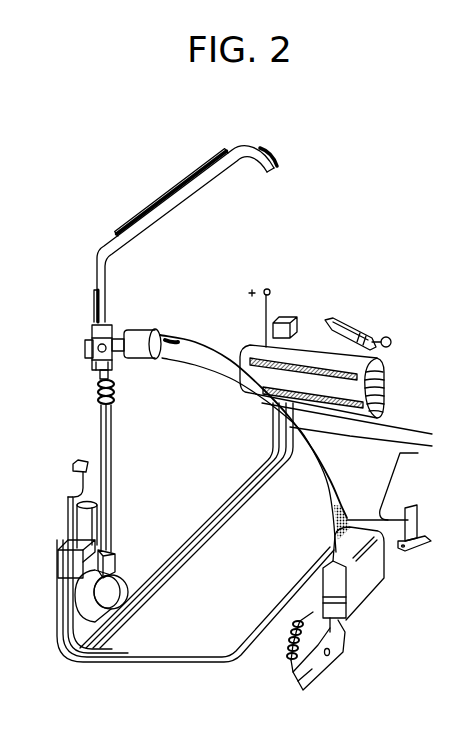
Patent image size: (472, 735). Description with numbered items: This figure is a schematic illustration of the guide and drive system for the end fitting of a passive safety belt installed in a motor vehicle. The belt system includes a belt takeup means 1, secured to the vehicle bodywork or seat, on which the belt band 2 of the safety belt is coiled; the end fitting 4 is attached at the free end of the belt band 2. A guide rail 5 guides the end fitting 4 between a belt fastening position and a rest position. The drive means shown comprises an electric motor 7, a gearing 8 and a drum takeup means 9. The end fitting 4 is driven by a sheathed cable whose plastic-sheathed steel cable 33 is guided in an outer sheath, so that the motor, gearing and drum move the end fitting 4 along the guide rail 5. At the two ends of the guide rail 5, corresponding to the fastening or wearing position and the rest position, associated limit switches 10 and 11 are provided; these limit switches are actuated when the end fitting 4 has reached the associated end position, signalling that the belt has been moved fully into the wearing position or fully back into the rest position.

The belt takeup means 1 is at (367, 573).
The belt band 2 is at (356, 487).
The end fitting 4 is at (145, 333).
The guide rail 5 is at (176, 204).
The electric motor 7 is at (82, 522).
The gearing 8 is at (80, 594).
The drum takeup means 9 is at (124, 601).
The limit switch 10 is at (98, 369).
The limit switch 11 is at (277, 163).
The plastic-sheathed steel cable 33 is at (113, 550).